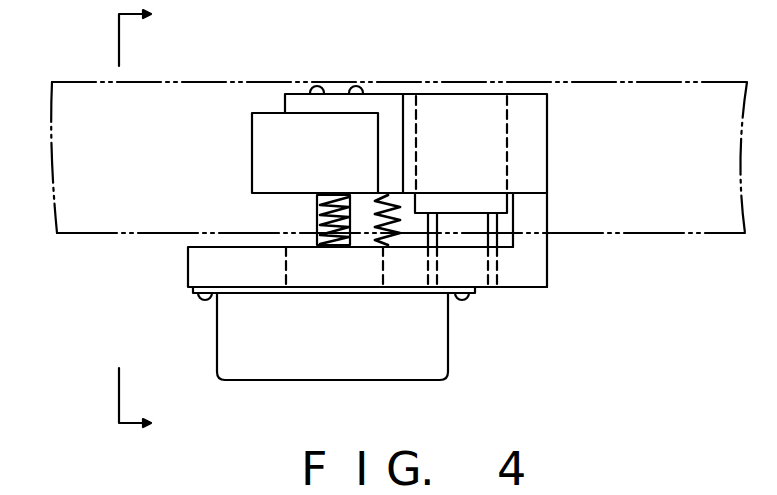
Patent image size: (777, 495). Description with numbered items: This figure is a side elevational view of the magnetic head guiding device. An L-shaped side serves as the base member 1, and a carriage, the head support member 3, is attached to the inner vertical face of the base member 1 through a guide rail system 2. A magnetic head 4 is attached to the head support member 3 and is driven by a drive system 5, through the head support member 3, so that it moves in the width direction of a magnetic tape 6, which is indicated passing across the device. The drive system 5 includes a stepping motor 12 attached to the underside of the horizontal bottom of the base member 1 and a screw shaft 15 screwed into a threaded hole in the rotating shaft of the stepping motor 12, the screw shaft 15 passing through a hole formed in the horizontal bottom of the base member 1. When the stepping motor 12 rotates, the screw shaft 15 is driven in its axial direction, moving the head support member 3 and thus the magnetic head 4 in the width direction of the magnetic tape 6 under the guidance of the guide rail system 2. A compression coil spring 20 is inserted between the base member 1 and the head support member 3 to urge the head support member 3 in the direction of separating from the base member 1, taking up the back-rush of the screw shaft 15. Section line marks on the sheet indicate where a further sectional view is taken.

The base member 1 is at (548, 285).
The guide rail system 2 is at (515, 215).
The head support member 3 is at (473, 93).
The magnetic head 4 is at (252, 180).
The drive system 5 is at (146, 221).
The magnetic tape 6 is at (652, 81).
The stepping motor 12 is at (449, 350).
The screw shaft 15 is at (318, 213).
The compression coil spring 20 is at (394, 195).